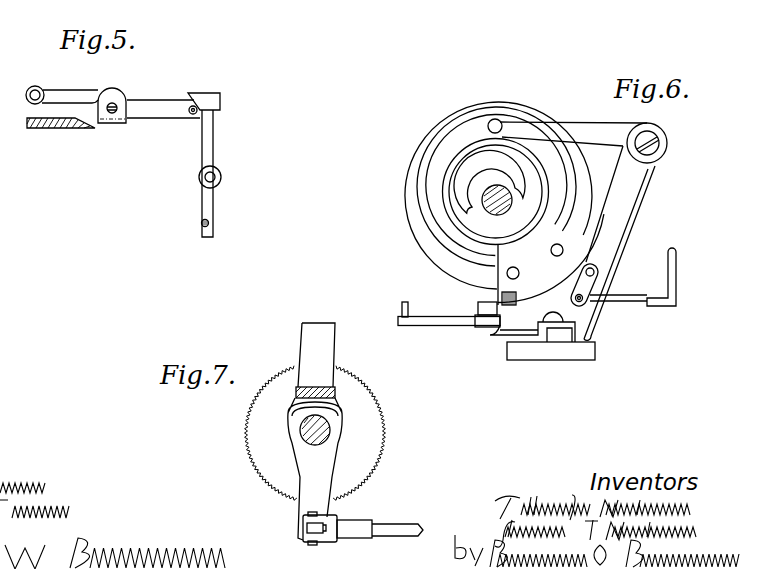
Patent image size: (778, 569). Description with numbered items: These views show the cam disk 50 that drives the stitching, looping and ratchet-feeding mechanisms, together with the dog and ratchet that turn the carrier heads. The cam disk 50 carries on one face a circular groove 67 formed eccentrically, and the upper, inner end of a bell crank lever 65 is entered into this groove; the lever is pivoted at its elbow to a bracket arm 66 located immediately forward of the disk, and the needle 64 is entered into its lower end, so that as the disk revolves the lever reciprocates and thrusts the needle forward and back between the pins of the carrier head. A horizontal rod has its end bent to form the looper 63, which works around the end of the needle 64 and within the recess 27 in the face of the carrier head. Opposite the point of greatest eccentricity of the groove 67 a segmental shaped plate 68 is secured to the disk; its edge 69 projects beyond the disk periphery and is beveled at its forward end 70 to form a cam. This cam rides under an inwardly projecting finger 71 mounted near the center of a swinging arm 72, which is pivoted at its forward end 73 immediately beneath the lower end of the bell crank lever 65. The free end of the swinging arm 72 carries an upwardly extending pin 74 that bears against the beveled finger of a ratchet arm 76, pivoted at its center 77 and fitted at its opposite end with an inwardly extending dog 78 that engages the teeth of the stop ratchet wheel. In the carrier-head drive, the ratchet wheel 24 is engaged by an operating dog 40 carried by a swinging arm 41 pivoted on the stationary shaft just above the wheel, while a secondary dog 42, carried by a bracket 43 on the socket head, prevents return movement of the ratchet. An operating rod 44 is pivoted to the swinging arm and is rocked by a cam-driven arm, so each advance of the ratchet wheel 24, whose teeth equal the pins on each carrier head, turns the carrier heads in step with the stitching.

In FIG. 7, the ratchet wheel 24 is at (377, 437).
In FIG. 6, the recess 27 is at (513, 197).
In FIG. 7, the operating dog 40 is at (332, 505).
In FIG. 7, the swinging arm 41 is at (313, 475).
In FIG. 7, the secondary dog 42 is at (298, 360).
In FIG. 7, the bracket 43 is at (320, 362).
In FIG. 7, the operating rod 44 is at (393, 533).
In FIG. 6, the cam disk 50 is at (492, 203).
In FIG. 6, the looper 63 is at (677, 278).
In FIG. 6, the needle 64 is at (630, 296).
In FIG. 6, the bell crank lever 65 is at (632, 203).
In FIG. 6, the bracket arm 66 is at (626, 231).
In FIG. 6, the circular groove 67 is at (472, 128).
In FIG. 6, the segmental shaped plate 68 is at (592, 247).
In FIG. 5, the edge 69 is at (62, 129).
In FIG. 6, the edge 69 is at (552, 283).
In FIG. 6, the forward end 70 is at (512, 307).
In FIG. 5, the finger 71 is at (112, 126).
In FIG. 6, the finger 71 is at (478, 302).
In FIG. 5, the swinging arm 72 is at (161, 107).
In FIG. 6, the swinging arm 72 is at (465, 322).
In FIG. 5, the forward end 73 is at (55, 82).
In FIG. 6, the forward end 73 is at (558, 333).
In FIG. 5, the pin 74 is at (192, 115).
In FIG. 6, the pin 74 is at (402, 303).
In FIG. 5, the ratchet arm 76 is at (210, 97).
In FIG. 5, the center 77 is at (215, 177).
In FIG. 5, the dog 78 is at (182, 227).